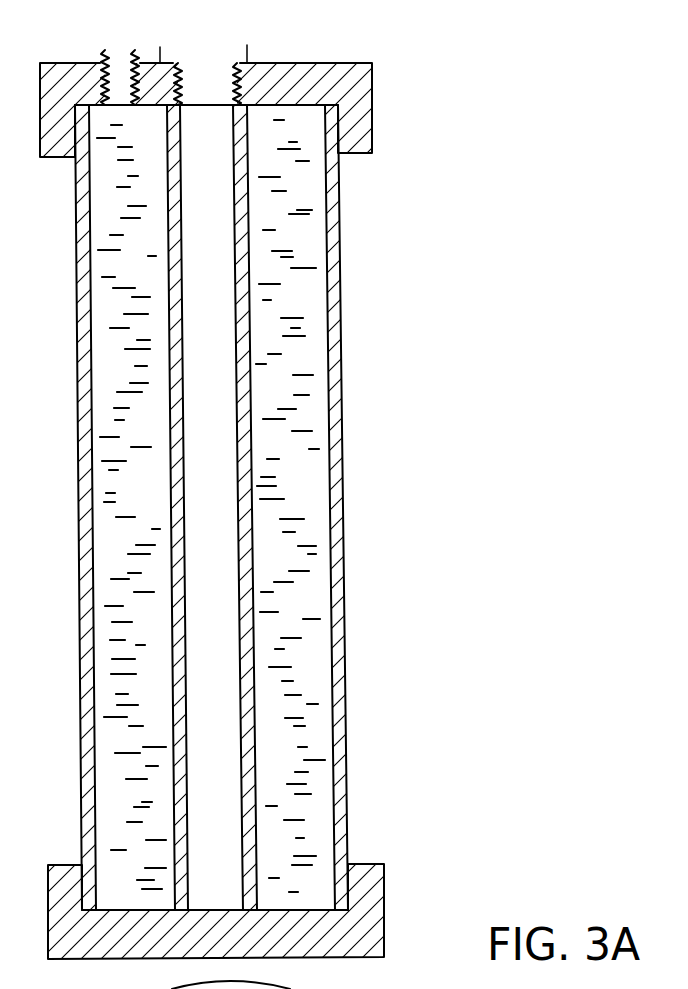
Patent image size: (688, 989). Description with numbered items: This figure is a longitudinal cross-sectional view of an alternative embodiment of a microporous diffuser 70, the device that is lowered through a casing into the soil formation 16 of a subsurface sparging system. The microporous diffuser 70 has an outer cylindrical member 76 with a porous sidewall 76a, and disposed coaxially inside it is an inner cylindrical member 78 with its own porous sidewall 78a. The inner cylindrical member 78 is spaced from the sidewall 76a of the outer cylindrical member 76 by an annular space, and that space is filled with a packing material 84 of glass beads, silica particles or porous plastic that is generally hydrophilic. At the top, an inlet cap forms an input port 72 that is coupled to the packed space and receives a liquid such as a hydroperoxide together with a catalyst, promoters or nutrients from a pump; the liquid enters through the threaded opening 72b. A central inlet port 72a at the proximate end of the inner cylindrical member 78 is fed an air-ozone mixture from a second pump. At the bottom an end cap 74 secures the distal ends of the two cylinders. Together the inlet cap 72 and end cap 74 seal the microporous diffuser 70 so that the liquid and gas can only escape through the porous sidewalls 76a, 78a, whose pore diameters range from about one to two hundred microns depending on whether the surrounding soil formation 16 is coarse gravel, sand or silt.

The soil formation 16 is at (344, 500).
The microporous diffuser 70 is at (344, 480).
The input port 72 is at (344, 480).
The inlet port 72a is at (191, 47).
The threaded port of top cap 72b is at (117, 48).
The end cap 74 is at (387, 930).
The outer cylindrical member 76 is at (343, 457).
The sidewall of outer cylindrical member 76a is at (77, 377).
The inner cylindrical member 78 is at (264, 577).
The sidewall of inner cylindrical member 78a is at (170, 502).
The sample material 84 is at (305, 265).